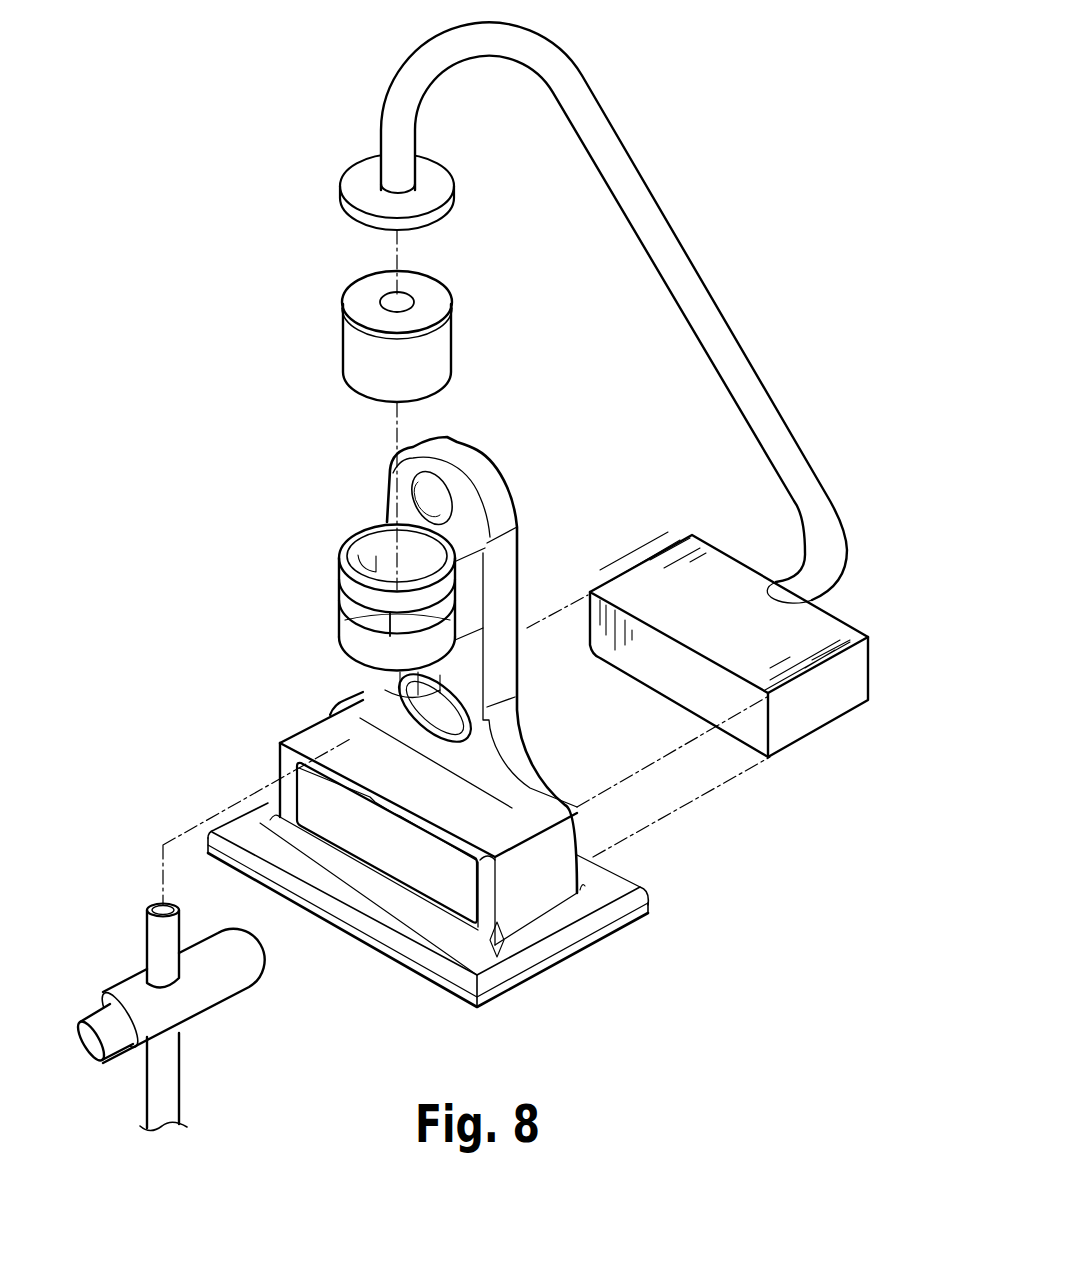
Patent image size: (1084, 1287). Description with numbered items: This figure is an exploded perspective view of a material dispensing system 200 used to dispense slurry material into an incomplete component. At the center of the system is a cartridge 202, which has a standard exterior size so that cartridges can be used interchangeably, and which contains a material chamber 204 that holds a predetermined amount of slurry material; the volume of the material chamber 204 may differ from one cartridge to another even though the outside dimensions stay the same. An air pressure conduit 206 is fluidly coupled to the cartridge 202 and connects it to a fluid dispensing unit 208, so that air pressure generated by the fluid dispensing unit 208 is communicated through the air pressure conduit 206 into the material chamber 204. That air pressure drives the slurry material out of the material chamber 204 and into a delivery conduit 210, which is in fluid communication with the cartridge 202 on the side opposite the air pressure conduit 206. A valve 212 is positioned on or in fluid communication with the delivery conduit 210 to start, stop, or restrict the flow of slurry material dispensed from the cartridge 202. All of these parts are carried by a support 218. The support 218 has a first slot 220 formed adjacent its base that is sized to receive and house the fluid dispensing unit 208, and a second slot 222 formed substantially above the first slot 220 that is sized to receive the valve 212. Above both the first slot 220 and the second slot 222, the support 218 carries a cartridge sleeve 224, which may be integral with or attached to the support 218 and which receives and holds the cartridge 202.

The material dispensing system 200 is at (220, 111).
The cartridge 202 is at (451, 337).
The material chamber 204 is at (424, 290).
The air pressure conduit 206 is at (700, 270).
The fluid dispensing unit 208 is at (872, 669).
The delivery conduit 210 is at (147, 908).
The valve 212 is at (252, 957).
The support 218 is at (497, 465).
The first slot 220 is at (293, 797).
The second slot 222 is at (392, 706).
The cartridge sleeve 224 is at (340, 567).